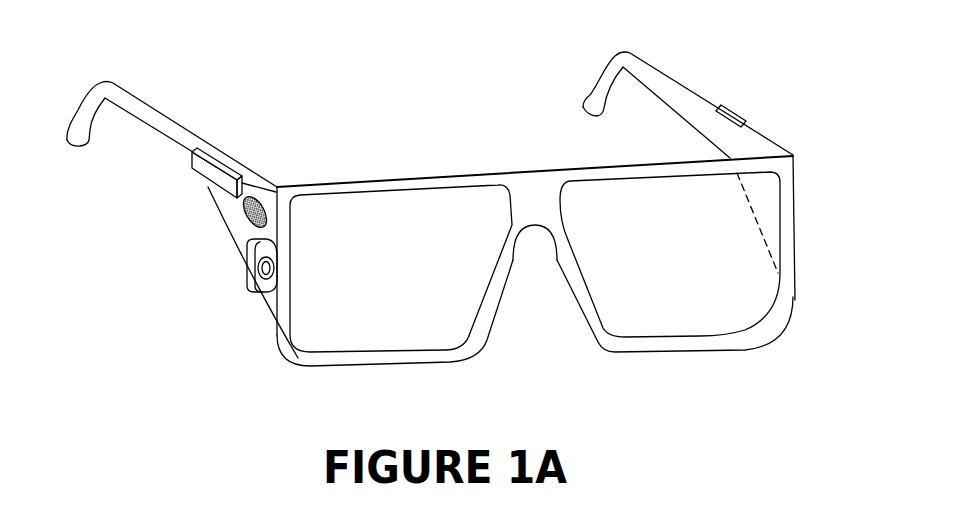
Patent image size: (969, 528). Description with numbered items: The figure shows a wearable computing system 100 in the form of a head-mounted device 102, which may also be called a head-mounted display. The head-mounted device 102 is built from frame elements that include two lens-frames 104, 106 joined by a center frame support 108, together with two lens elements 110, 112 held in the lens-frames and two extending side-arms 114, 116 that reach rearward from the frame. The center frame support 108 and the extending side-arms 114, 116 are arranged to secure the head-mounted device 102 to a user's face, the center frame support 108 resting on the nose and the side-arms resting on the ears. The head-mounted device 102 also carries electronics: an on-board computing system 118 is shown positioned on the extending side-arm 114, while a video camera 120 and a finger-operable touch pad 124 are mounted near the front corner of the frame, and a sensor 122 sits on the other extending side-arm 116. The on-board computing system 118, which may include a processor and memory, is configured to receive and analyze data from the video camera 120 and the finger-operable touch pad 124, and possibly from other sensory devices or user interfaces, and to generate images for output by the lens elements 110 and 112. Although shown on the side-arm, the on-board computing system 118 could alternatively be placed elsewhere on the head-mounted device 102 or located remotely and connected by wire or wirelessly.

The wearable computing system 100 is at (806, 330).
The head-mounted device 102 is at (378, 77).
The lens-frame 104 is at (373, 187).
The lens-frame 106 is at (612, 170).
The center frame support 108 is at (537, 192).
The lens element 110 is at (345, 333).
The lens element 112 is at (687, 318).
The extending side-arm 114 is at (212, 152).
The extending side-arm 116 is at (692, 92).
The on-board computing system 118 is at (210, 170).
The video camera 120 is at (247, 257).
The sensor 122 is at (735, 112).
The finger-operable touch pad 124 is at (252, 210).